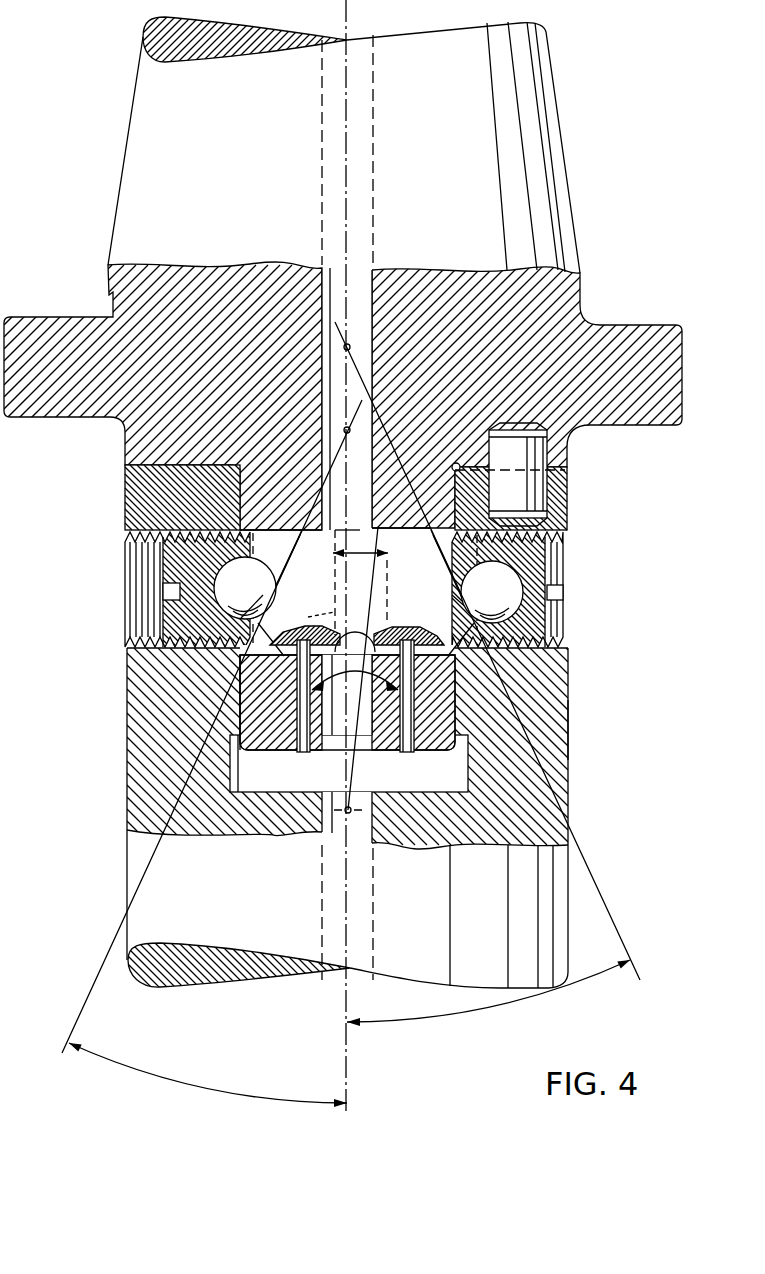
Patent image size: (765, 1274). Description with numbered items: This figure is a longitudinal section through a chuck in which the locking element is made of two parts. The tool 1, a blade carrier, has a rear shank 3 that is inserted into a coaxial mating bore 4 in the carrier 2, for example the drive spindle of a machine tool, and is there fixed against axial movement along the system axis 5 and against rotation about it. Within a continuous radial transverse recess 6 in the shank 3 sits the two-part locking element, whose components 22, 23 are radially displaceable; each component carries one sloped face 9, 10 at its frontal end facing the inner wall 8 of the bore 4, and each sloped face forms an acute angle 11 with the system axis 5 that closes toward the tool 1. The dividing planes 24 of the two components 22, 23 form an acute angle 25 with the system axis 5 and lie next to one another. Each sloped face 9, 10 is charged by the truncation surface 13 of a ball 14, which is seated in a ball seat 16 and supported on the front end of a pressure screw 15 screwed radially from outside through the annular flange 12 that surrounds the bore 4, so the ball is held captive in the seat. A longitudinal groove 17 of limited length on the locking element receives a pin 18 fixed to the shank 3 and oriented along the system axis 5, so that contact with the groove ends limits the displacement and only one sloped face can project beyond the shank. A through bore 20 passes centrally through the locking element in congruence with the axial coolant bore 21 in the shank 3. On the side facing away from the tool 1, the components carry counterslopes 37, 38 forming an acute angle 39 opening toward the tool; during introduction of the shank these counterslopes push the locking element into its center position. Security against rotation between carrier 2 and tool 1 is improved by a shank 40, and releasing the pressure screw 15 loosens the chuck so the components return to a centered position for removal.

The tool 1 is at (578, 205).
The carrier 2 is at (575, 760).
The shank 3 is at (450, 720).
The mating bore 4 is at (236, 703).
The system axis 5 is at (348, 16).
The transverse recess 6 is at (262, 538).
The inner wall 8 is at (255, 720).
The sloped face 9 is at (286, 527).
The sloped face 10 is at (447, 540).
The acute angle 11 is at (511, 1005).
The annular flange 12 is at (545, 700).
The truncation surface 13 is at (266, 610).
The ball 14 is at (390, 553).
The pressure screw 15 is at (162, 572).
The ball seat 16 is at (225, 606).
The longitudinal groove 17 is at (336, 612).
The pin 18 is at (302, 750).
The through bore 20 is at (311, 621).
The coolant bore 21 is at (365, 323).
The component 22 is at (313, 520).
The component 23 is at (395, 524).
The dividing planes 24 is at (370, 583).
The acute angle 25 is at (357, 536).
The counterslope 37 is at (275, 656).
The counterslope 38 is at (423, 658).
The acute angle 39 is at (353, 678).
The shank 40 is at (535, 457).